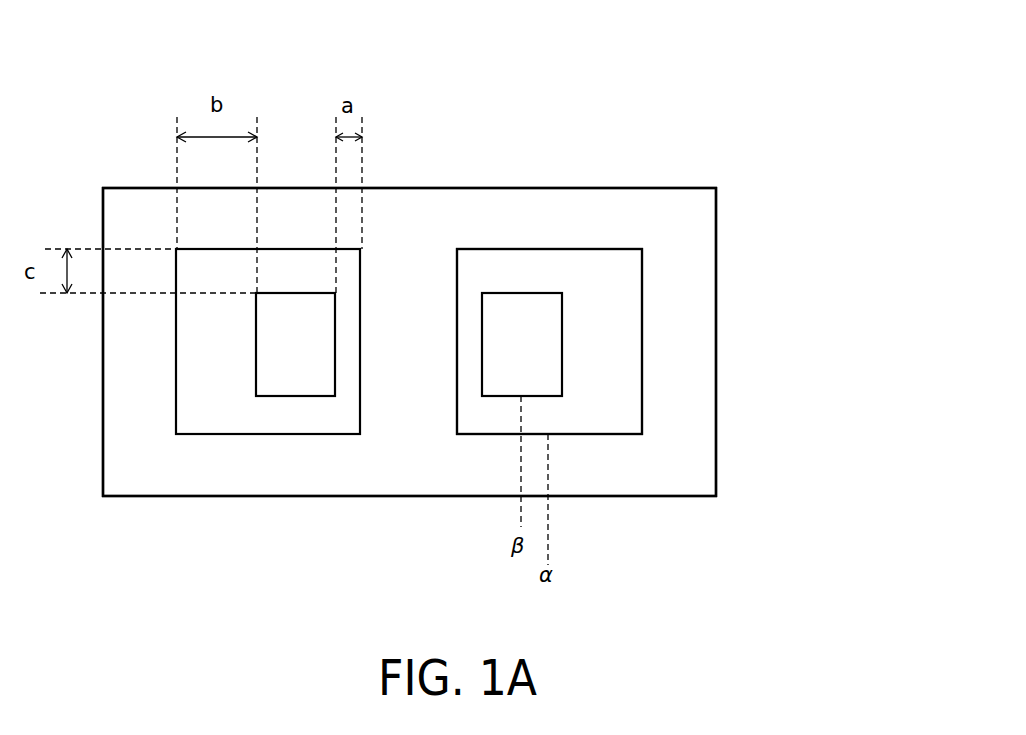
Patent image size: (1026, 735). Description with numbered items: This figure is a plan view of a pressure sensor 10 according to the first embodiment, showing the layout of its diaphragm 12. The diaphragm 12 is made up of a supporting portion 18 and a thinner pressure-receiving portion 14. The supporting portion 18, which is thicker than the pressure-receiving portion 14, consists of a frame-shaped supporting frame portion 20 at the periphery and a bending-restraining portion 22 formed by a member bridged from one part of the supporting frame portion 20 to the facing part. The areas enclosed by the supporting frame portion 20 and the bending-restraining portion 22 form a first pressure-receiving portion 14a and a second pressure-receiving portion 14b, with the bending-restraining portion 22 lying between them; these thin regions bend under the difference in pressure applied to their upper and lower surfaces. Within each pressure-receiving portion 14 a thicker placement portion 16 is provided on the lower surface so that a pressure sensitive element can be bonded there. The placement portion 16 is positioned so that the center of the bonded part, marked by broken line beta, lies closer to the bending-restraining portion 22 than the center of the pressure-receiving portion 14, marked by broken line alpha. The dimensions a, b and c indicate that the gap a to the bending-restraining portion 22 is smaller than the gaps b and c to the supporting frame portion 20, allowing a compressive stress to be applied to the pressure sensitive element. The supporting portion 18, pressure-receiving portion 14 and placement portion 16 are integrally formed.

The pressure sensor 10 is at (393, 87).
The diaphragm 12 is at (718, 250).
The pressure-receiving portion 14 is at (507, 420).
The first pressure-receiving portion 14a is at (225, 419).
The second pressure-receiving portion 14b is at (623, 354).
The placement portion 16 is at (535, 310).
The supporting portion 18 is at (619, 498).
The supporting frame portion 20 is at (682, 448).
The bending-restraining portion 22 is at (432, 302).